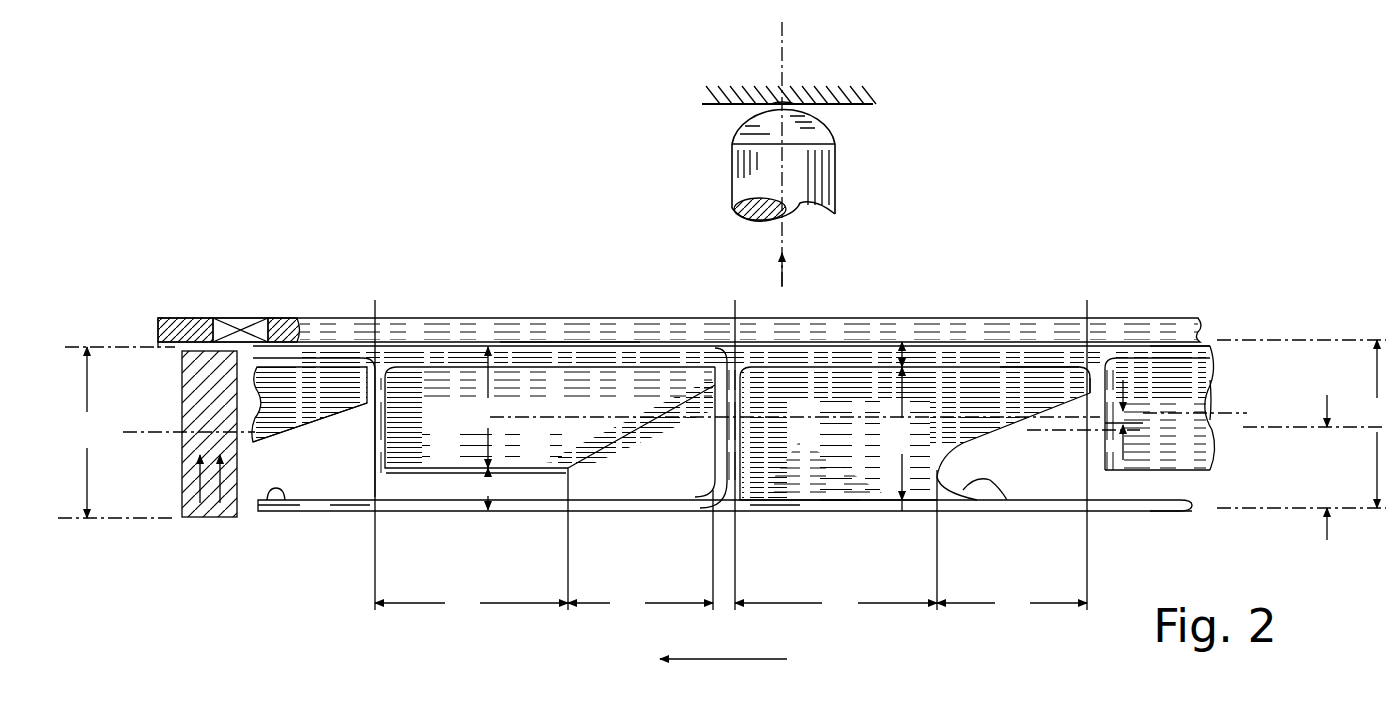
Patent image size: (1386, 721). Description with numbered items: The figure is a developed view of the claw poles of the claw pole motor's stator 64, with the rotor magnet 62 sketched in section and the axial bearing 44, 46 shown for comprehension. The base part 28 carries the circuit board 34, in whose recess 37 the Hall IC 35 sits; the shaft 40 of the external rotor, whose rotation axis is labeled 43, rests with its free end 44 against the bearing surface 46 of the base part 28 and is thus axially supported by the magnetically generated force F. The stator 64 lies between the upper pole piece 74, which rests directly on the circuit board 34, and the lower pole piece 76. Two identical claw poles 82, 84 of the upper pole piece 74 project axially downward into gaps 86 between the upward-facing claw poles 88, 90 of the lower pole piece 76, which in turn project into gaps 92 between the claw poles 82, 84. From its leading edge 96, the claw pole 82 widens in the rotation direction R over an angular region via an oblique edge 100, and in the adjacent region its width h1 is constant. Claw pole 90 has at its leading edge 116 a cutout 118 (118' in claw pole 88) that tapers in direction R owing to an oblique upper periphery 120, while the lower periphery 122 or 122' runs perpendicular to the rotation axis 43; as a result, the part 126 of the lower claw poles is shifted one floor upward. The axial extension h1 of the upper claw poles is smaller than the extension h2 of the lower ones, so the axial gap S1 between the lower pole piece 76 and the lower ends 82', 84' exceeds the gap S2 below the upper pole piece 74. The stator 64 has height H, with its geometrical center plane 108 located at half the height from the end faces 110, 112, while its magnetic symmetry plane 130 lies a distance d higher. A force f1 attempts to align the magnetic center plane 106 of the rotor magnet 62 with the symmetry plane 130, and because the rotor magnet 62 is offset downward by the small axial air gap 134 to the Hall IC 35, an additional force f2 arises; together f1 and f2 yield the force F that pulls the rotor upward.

The base part 28 is at (855, 94).
The circuit board 34 is at (448, 320).
The Hall IC 35 is at (247, 318).
The recess 37 is at (223, 327).
The shaft 40 is at (838, 192).
The rotation axis 43 is at (782, 48).
The free end 44 is at (800, 118).
The bearing surface 46 is at (735, 104).
The rotor magnet 62 is at (183, 412).
The stator 64 is at (1227, 397).
The upper pole piece 74 is at (1197, 347).
The lower pole piece 76 is at (832, 505).
The claw pole 82 is at (551, 428).
The lower end of upper claw pole 82' is at (476, 514).
The claw pole 84 is at (1160, 408).
The lower end of upper claw pole 84' is at (1181, 530).
The gaps 86 is at (615, 486).
The claw pole 88 is at (313, 406).
The claw pole 90 is at (812, 451).
The gaps 92 is at (307, 362).
The leading edge 96 is at (731, 366).
The oblique edge 100 is at (637, 430).
The magnetic center plane 106 is at (163, 436).
The geometrical center plane 108 is at (1253, 432).
The axial end face 110 is at (777, 512).
The axial end face 112 is at (570, 342).
The leading edge 116 is at (1095, 378).
The cutout 118 is at (1009, 502).
The cutout 118' is at (293, 514).
The upper periphery 120 is at (323, 420).
The lower periphery 122 is at (725, 537).
The lower periphery 122' is at (358, 546).
The part of claw pole 126 is at (1020, 383).
The magnetic symmetry plane 130 is at (1148, 405).
The axial air gap 134 is at (170, 352).
The magnetic force F is at (790, 262).
The rotation direction R is at (728, 659).
The total height H is at (722, 440).
The distance d is at (1137, 428).
The axial extension h1 is at (790, 407).
The axial extension h2 is at (905, 439).
The axial gap S1 is at (487, 489).
The axial gap S2 is at (913, 360).
The force f1 is at (196, 517).
The force f2 is at (215, 517).